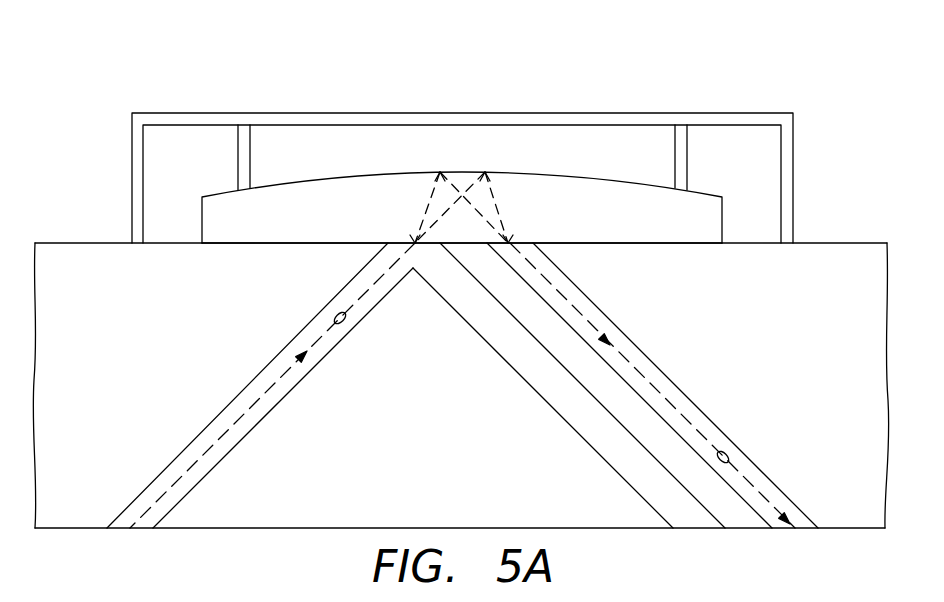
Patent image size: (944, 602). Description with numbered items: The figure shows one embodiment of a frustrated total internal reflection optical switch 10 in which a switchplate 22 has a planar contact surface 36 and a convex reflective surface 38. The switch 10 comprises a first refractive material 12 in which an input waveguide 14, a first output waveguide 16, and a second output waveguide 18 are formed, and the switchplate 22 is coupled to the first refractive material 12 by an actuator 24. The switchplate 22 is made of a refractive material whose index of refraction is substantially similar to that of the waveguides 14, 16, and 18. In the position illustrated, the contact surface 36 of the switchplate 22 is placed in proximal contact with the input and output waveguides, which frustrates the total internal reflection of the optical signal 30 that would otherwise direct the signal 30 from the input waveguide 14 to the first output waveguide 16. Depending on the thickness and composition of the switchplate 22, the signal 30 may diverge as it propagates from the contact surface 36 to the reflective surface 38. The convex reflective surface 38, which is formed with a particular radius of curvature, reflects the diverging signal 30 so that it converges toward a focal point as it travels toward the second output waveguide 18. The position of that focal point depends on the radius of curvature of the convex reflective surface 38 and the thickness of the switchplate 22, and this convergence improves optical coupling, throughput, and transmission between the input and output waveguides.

The optical switch 10 is at (255, 68).
The first refractive material 12 is at (82, 314).
The input waveguide 14 is at (289, 398).
The first output waveguide 16 is at (542, 400).
The second output waveguide 18 is at (675, 385).
The switchplate 22 is at (288, 226).
The actuator 24 is at (793, 184).
The optical signal 30 is at (346, 325).
The contact surface 36 is at (688, 243).
The reflective surface 38 is at (703, 190).